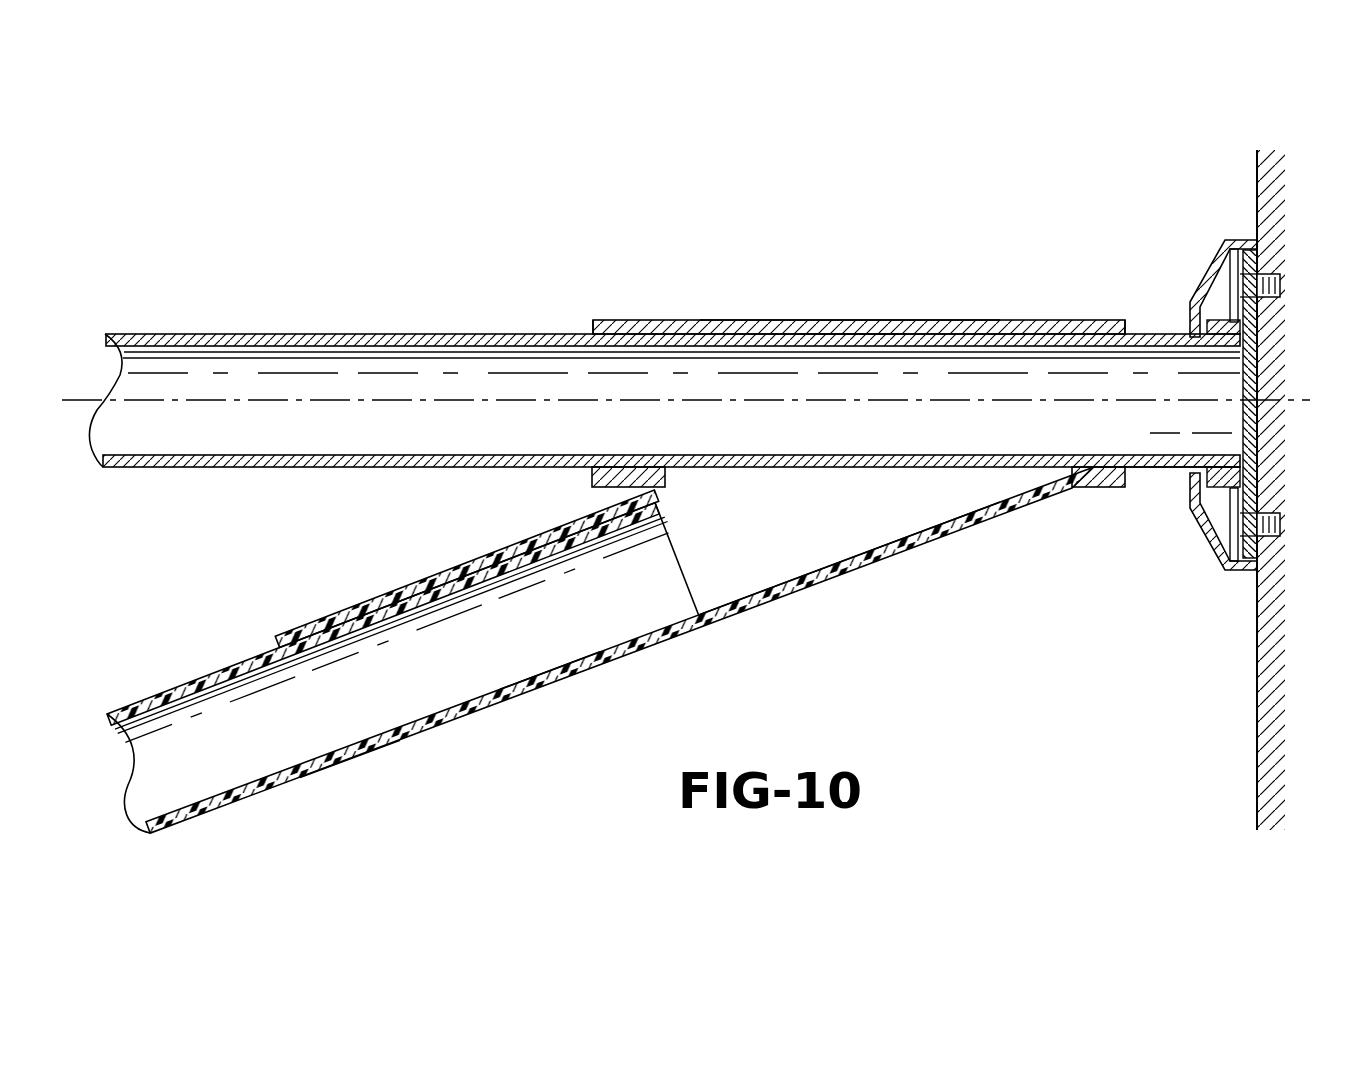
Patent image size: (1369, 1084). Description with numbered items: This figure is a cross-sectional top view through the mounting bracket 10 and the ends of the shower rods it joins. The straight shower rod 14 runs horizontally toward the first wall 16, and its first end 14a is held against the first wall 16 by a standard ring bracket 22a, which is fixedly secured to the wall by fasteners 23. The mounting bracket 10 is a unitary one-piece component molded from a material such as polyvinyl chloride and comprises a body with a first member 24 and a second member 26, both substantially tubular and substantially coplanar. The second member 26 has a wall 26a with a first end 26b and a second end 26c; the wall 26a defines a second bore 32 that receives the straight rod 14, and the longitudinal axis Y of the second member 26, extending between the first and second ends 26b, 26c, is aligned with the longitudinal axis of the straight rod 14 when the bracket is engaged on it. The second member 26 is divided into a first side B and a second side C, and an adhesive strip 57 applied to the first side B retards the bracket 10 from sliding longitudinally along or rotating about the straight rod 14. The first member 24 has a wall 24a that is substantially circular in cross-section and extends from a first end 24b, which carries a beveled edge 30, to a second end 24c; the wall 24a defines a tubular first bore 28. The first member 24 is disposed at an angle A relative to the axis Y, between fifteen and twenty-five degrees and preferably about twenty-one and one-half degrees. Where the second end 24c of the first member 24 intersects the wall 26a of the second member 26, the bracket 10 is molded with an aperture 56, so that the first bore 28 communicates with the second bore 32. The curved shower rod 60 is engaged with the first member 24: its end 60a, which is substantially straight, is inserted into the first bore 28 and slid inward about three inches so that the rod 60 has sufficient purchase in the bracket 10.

The mounting bracket 10 is at (962, 300).
The straight shower rod 14 is at (220, 330).
The first end of straight rod 14a is at (1165, 470).
The first wall 16 is at (1257, 620).
The ring bracket 22a is at (1213, 255).
The fasteners 23 is at (1282, 300).
The first member 24 is at (568, 690).
The wall of first member 24a is at (560, 670).
The first end of first member wall 24b is at (345, 765).
The second end of first member wall 24c is at (1055, 490).
The second member 26 is at (813, 315).
The wall of second member 26a is at (847, 320).
The first end of second member 26b is at (592, 328).
The second end of second member 26c is at (1123, 333).
The first bore 28 is at (717, 600).
The beveled edge 30 is at (285, 647).
The second bore 32 is at (610, 468).
The aperture 56 is at (902, 477).
The adhesive strip 57 is at (838, 337).
The curved shower rod 60 is at (168, 685).
The end of curved rod 60a is at (682, 622).
The angle A is at (416, 476).
The first side of second member B is at (703, 312).
The second side of second member C is at (1103, 496).
The longitudinal axis Y is at (1305, 405).